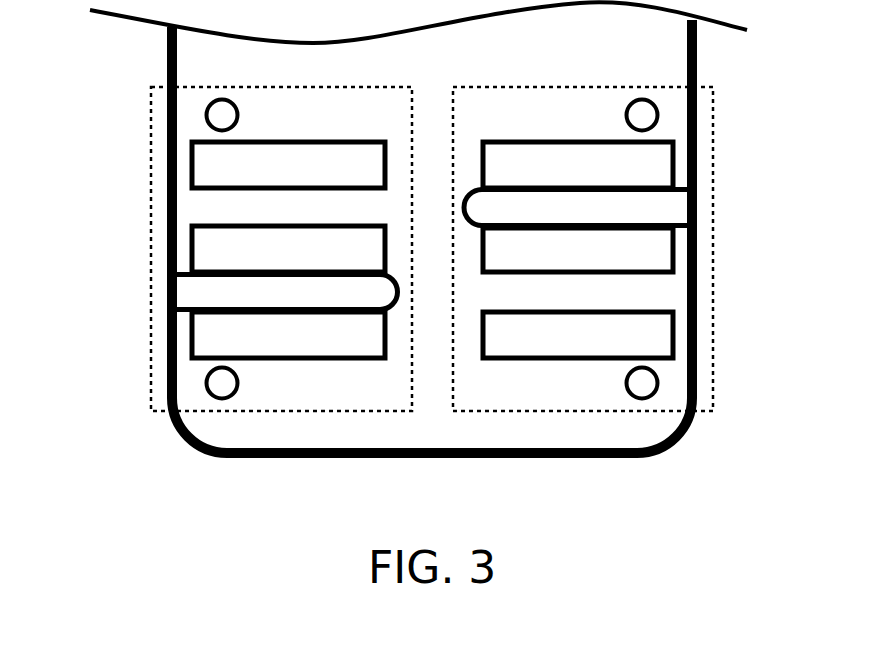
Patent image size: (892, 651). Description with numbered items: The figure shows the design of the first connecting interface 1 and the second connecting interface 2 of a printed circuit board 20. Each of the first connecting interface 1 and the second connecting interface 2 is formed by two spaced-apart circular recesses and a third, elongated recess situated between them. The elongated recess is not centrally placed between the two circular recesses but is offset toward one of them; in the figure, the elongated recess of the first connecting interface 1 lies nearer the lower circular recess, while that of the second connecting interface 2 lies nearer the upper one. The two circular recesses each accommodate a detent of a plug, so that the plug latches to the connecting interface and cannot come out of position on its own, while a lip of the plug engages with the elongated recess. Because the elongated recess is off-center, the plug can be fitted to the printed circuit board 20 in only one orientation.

The printed circuit board 20 is at (120, 107).
The first connecting interface 1 is at (237, 302).
The second connecting interface 2 is at (624, 302).